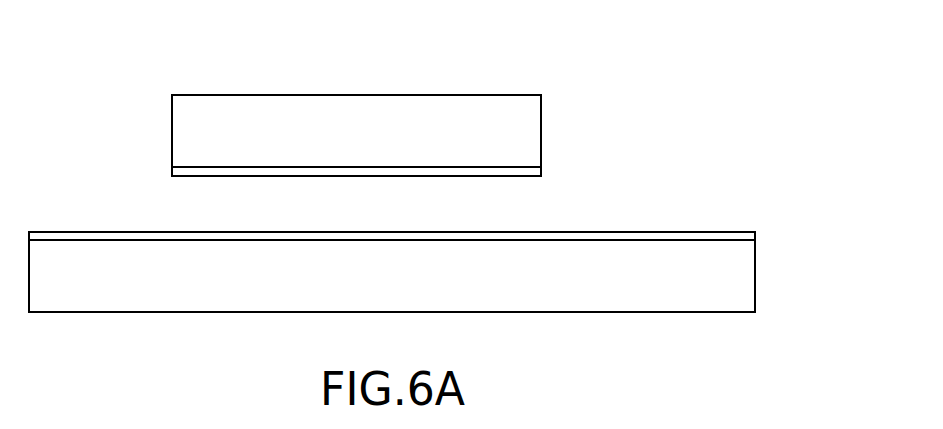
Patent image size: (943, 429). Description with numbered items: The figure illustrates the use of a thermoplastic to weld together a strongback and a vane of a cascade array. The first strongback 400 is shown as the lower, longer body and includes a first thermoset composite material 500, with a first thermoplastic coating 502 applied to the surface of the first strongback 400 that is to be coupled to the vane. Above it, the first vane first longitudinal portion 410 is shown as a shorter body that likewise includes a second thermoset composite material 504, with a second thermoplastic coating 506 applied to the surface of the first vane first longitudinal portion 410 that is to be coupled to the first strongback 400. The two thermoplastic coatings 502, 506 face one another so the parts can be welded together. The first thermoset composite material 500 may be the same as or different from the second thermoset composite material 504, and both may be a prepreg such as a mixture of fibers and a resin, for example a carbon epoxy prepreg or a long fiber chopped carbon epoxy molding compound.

The first strongback 400 is at (755, 275).
The first thermoset composite material 500 is at (613, 293).
The first thermoplastic coating 502 is at (604, 237).
The first vane first longitudinal portion 410 is at (352, 112).
The second thermoset composite material 504 is at (533, 113).
The second thermoplastic coating 506 is at (397, 172).